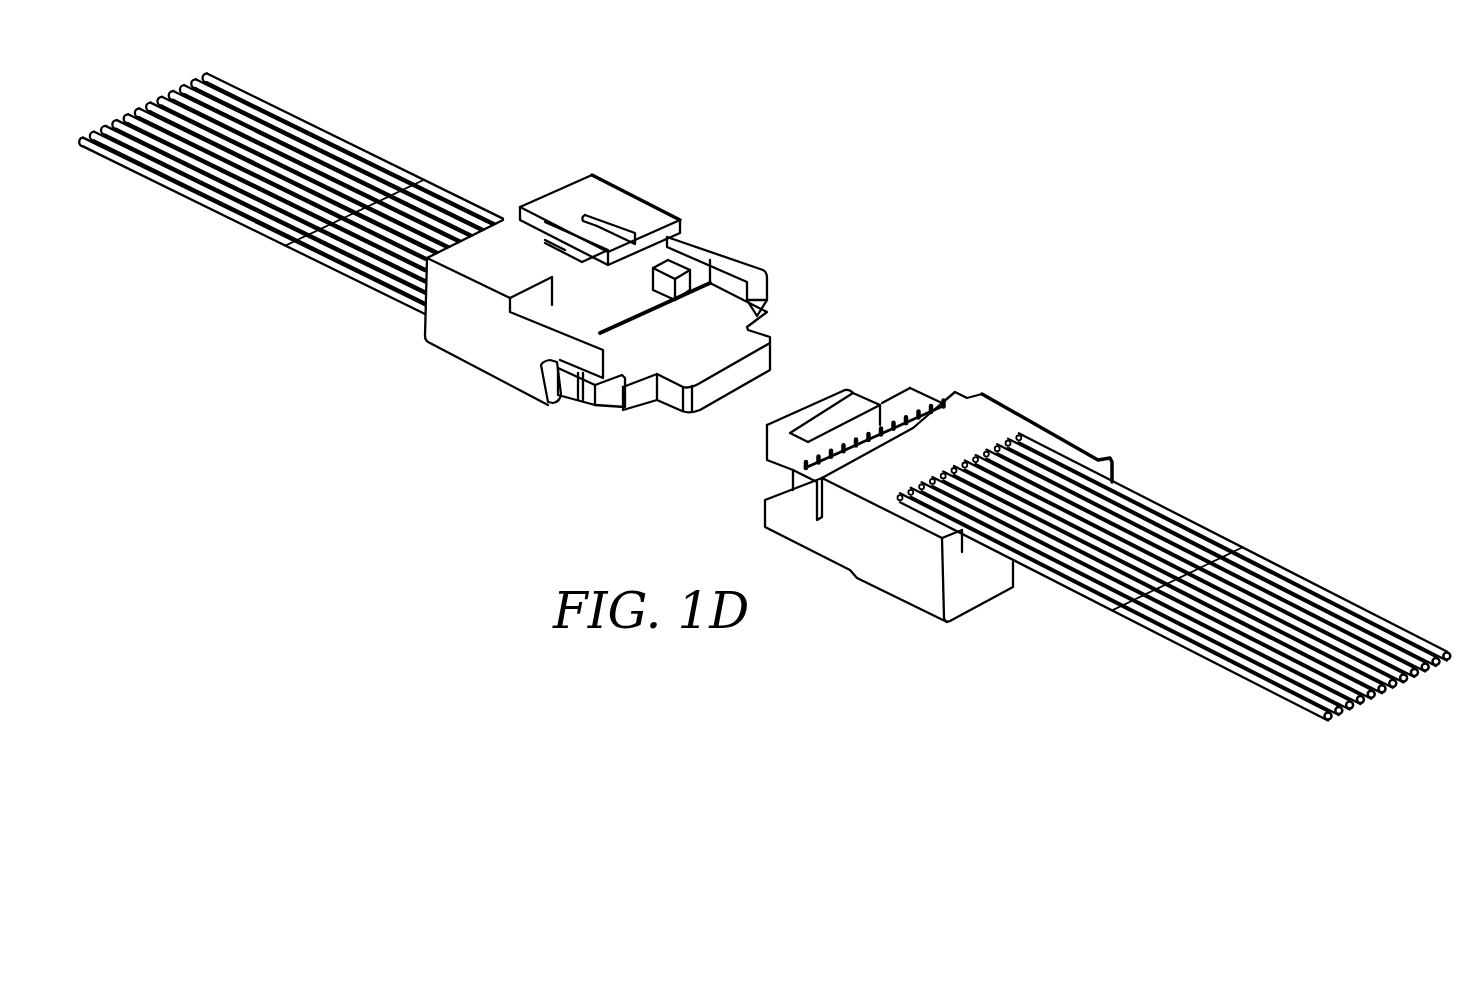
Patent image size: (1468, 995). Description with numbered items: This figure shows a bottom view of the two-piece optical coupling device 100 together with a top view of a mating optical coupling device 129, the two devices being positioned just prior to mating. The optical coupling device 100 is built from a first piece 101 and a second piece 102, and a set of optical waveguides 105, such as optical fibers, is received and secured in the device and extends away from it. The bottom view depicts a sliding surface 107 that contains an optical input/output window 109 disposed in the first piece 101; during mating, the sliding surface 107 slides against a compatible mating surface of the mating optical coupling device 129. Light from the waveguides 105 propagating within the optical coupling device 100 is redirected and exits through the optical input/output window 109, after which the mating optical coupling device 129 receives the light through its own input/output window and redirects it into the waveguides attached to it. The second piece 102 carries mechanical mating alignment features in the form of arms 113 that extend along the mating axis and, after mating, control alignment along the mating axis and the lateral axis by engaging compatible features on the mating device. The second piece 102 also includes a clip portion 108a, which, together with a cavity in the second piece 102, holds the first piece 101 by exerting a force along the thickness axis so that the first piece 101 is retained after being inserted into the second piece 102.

The optical coupling device 100 is at (799, 138).
The first piece 101 is at (613, 395).
The second piece 102 is at (600, 196).
The optical waveguides 105 is at (428, 186).
The sliding surface 107 is at (754, 317).
The first clip portion 108a is at (668, 252).
The optical input/output window 109 is at (717, 303).
The arms 113 is at (567, 358).
The mating optical coupling device 129 is at (1007, 388).